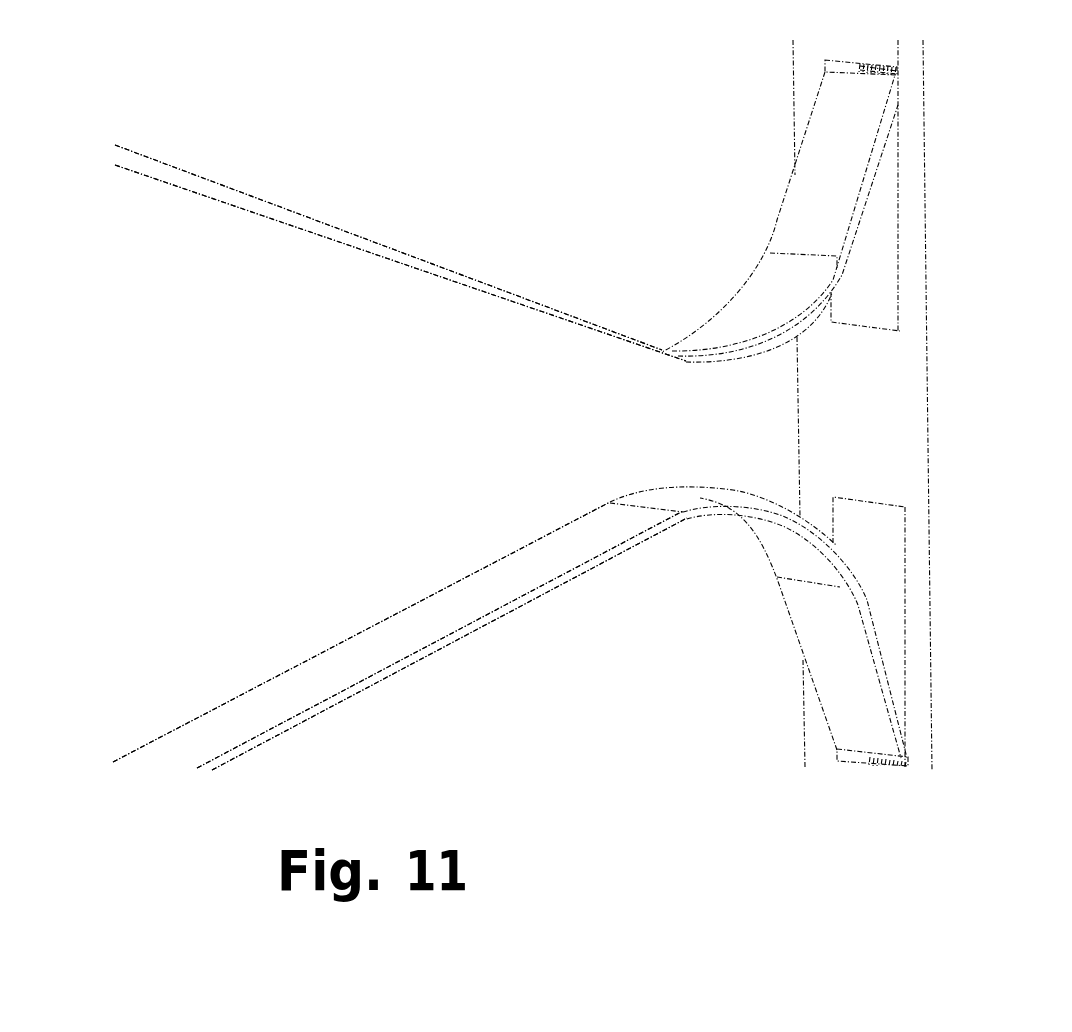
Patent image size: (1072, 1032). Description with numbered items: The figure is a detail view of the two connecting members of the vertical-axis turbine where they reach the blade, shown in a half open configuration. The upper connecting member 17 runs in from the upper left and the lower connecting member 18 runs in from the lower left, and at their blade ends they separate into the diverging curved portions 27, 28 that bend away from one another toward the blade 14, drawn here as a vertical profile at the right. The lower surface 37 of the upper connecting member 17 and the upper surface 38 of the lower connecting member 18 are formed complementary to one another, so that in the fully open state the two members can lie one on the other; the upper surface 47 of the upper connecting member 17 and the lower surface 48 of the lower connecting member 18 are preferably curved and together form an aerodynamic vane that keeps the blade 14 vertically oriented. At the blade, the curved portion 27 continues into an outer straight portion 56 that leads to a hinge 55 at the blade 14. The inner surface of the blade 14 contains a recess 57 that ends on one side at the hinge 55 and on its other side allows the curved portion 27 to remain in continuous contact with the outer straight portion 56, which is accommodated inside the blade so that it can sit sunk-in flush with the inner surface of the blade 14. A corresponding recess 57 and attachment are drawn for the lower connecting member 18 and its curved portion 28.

The blade 14 is at (878, 400).
The upper connecting member 17 is at (137, 168).
The lower connecting member 18 is at (360, 667).
The curved portion 27 is at (719, 357).
The curved portion 28 is at (697, 497).
The lower surface 37 is at (332, 247).
The upper surface 38 is at (418, 625).
The upper surface 47 is at (443, 267).
The lower surface 48 is at (526, 635).
The hinge 55 is at (867, 64).
The outer straight portion 56 is at (810, 183).
The recess 57 is at (880, 312).